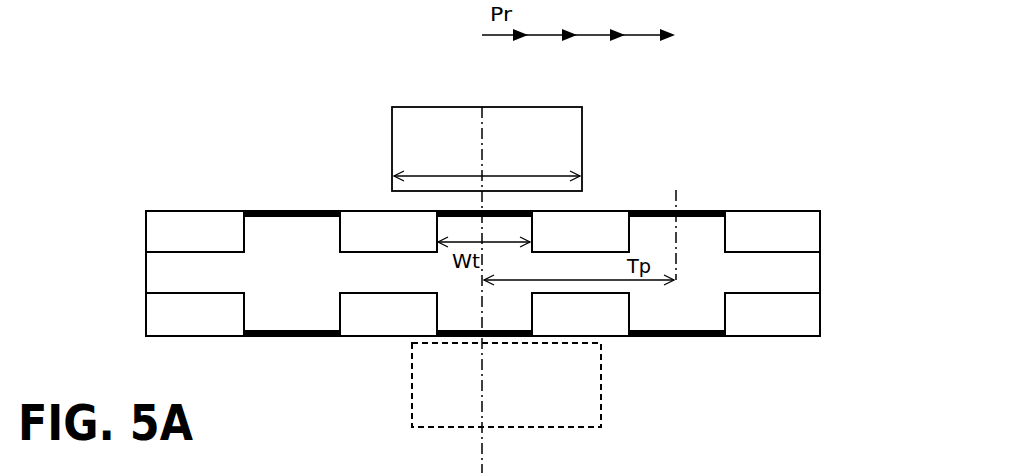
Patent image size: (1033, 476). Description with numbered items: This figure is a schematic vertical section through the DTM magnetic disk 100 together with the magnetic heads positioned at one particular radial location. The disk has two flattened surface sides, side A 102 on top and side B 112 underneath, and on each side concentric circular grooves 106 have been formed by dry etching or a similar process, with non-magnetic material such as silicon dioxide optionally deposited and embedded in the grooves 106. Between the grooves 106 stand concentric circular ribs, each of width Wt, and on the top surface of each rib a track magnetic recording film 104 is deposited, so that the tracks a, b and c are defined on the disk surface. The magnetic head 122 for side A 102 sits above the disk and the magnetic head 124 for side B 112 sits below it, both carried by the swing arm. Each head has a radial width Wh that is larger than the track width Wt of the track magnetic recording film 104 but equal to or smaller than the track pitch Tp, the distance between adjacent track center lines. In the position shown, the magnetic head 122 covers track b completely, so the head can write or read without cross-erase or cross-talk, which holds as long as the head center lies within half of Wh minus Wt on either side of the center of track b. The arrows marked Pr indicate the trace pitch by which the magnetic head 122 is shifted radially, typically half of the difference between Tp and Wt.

The DTM magnetic disk 100 is at (810, 282).
The side A 102 is at (761, 211).
The track magnetic recording film 104 is at (263, 210).
The concentric circular grooves 106 is at (359, 222).
The side B 112 is at (768, 337).
The magnetic head 122 is at (527, 115).
The magnetic head 124 is at (595, 417).
The track a is at (308, 210).
The track b is at (456, 211).
The track c is at (689, 210).